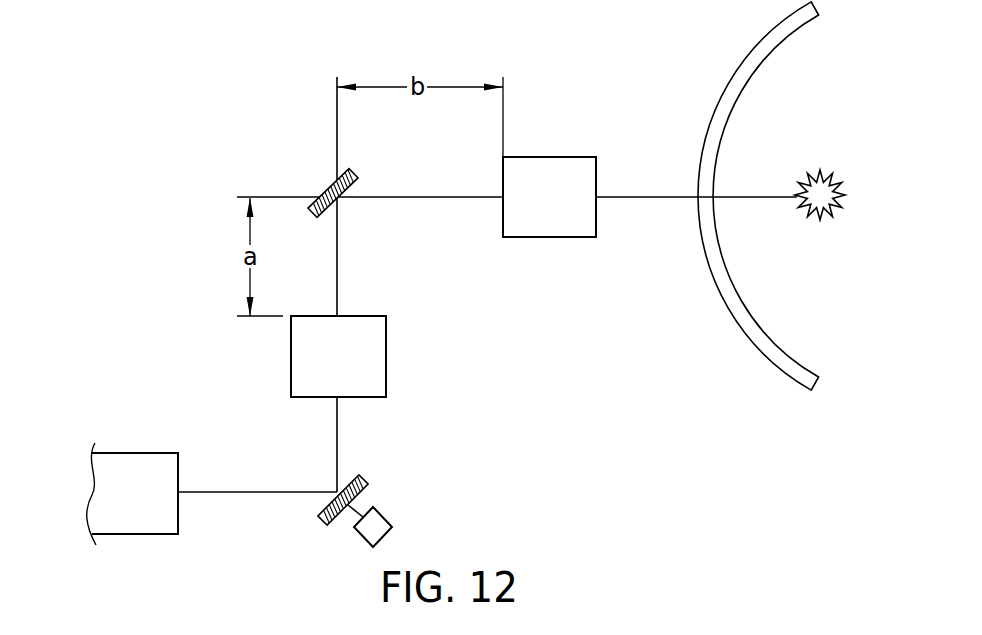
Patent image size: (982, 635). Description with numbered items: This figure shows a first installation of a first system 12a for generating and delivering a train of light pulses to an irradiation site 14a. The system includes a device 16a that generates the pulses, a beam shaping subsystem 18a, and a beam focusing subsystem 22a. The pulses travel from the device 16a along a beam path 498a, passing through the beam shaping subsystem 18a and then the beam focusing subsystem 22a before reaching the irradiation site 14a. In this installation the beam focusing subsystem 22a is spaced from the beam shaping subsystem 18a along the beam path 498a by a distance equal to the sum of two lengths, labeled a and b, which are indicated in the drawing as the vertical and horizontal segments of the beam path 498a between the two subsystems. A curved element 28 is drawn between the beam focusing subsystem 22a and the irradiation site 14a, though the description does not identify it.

The first system 12a is at (172, 270).
The beam path 498a is at (337, 288).
The beam shaping subsystem 18a is at (360, 368).
The beam focusing subsystem 22a is at (572, 210).
The device generating pulses 16a is at (158, 505).
The curved reflector / window 28 is at (738, 68).
The irradiation site 14a is at (825, 217).